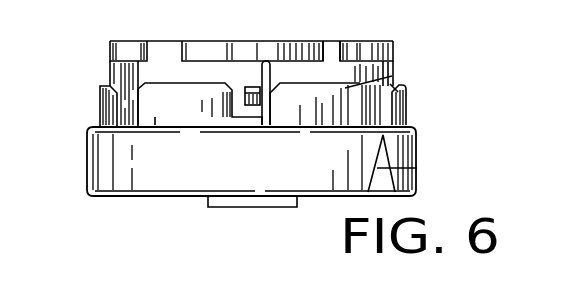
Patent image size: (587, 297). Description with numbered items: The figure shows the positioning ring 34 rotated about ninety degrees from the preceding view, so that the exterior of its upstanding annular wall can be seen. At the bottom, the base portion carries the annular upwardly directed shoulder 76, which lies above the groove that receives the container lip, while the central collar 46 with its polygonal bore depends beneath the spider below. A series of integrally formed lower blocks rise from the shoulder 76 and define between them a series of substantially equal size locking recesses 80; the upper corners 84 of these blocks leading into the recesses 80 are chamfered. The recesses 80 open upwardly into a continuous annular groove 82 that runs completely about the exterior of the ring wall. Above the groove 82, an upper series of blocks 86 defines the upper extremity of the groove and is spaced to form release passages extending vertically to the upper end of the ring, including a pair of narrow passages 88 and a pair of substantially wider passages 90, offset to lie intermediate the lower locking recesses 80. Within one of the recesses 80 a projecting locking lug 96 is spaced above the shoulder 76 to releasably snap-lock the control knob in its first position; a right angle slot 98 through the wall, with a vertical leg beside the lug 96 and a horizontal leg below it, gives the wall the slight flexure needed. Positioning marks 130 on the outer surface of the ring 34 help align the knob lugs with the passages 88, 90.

The positioning ring 34 is at (90, 68).
The wider release passages 90 is at (162, 53).
The narrow passages 88 is at (332, 46).
The upper blocks 86 is at (387, 41).
The annular groove 82 is at (395, 67).
The upper corners 84 is at (394, 79).
The shoulder 76 is at (414, 127).
The positioning marks 130 is at (417, 168).
The locking lug 96 is at (245, 88).
The right angle slot 98 is at (272, 73).
The locking recesses 80 is at (243, 110).
The central collar 46 is at (233, 214).